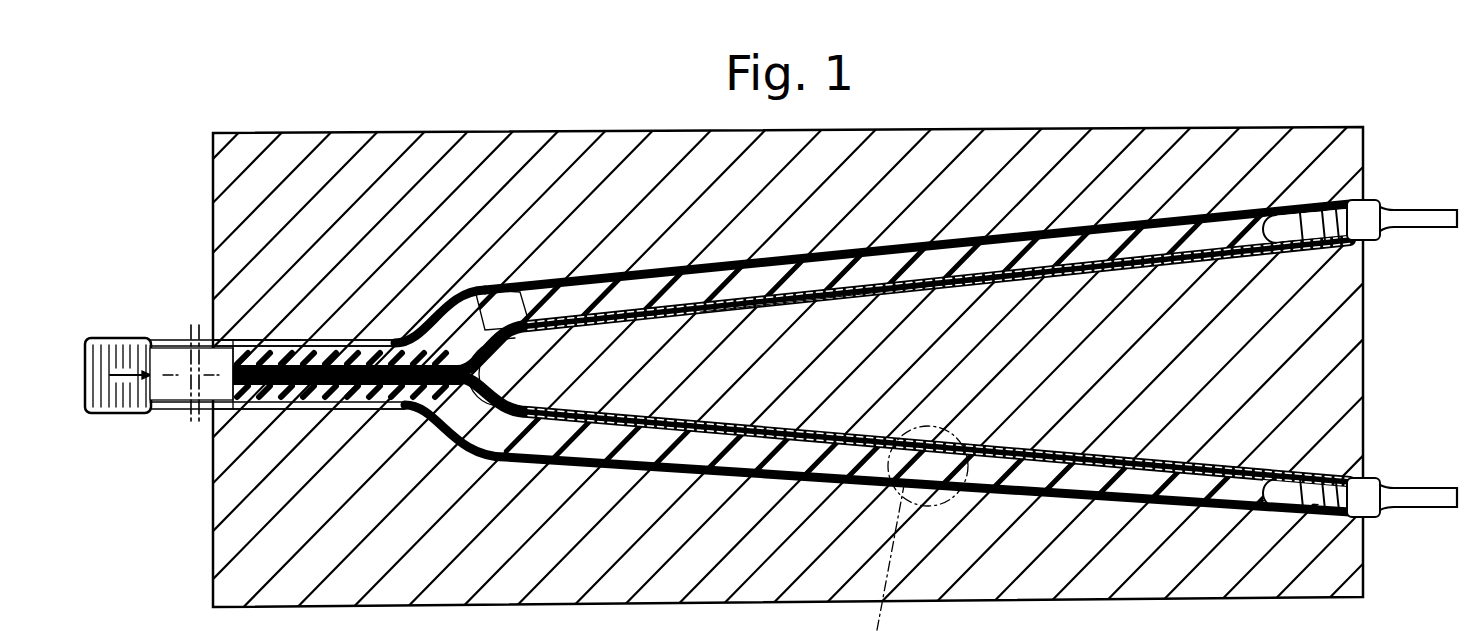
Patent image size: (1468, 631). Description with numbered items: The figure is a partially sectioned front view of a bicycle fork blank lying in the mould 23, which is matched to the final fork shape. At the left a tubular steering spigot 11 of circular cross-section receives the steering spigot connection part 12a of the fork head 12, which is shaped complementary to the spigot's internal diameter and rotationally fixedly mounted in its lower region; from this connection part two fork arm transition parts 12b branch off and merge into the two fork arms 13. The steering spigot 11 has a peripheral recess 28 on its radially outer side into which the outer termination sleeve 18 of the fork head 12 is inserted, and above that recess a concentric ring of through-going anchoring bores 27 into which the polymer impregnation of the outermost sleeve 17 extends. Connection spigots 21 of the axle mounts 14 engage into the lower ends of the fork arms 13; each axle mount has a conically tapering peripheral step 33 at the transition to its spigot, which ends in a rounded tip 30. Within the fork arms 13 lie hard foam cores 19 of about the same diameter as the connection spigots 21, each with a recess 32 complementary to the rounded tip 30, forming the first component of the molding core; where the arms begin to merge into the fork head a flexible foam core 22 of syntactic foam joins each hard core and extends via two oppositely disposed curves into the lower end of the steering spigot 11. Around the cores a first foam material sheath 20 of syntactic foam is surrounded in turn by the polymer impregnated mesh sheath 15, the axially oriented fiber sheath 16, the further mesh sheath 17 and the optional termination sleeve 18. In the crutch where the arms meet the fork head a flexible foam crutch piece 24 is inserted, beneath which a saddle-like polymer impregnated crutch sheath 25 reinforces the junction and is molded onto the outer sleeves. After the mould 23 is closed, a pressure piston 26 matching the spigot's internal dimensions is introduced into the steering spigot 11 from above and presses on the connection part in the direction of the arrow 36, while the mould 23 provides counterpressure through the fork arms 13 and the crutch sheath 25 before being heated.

The steering spigot 11 is at (147, 418).
The fork head 12 is at (408, 407).
The steering spigot connection part 12a is at (415, 309).
The fork arm transition parts 12b is at (482, 290).
The fork arms 13 is at (940, 243).
The axle mounts 14 is at (1387, 192).
The first polymer impregnated sheath 15 is at (658, 313).
The sheath 16 is at (939, 361).
The sheath 17 is at (939, 447).
The termination sleeve 18 is at (350, 343).
The hard foam cores 19 is at (888, 282).
The first foam material sheath 20 is at (840, 290).
The connection spigots 21 is at (1308, 203).
The flexible foam core 22 is at (518, 305).
The mould 23 is at (579, 574).
The flexible foam crutch piece 24 is at (491, 367).
The crutch sheath 25 is at (506, 387).
The pressure piston 26 is at (176, 346).
The anchoring bores 27 is at (298, 340).
The peripheral recess 28 is at (347, 409).
The rounded tip 30 is at (1266, 222).
The recess 32 is at (1265, 243).
The peripheral step 33 is at (1350, 230).
The arrow 36 is at (118, 373).